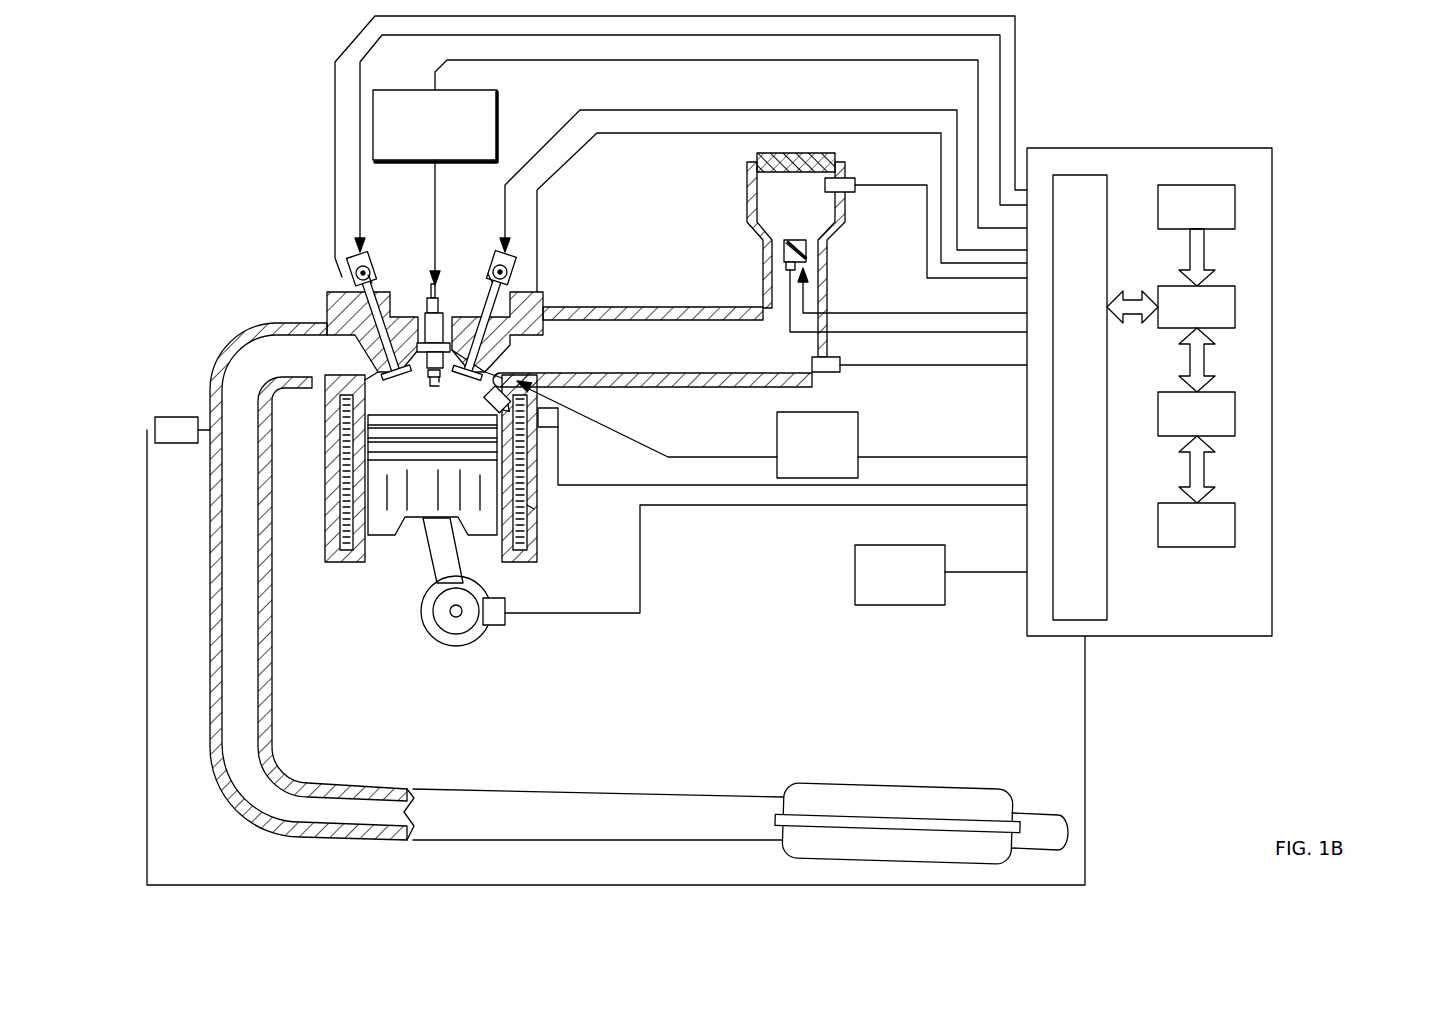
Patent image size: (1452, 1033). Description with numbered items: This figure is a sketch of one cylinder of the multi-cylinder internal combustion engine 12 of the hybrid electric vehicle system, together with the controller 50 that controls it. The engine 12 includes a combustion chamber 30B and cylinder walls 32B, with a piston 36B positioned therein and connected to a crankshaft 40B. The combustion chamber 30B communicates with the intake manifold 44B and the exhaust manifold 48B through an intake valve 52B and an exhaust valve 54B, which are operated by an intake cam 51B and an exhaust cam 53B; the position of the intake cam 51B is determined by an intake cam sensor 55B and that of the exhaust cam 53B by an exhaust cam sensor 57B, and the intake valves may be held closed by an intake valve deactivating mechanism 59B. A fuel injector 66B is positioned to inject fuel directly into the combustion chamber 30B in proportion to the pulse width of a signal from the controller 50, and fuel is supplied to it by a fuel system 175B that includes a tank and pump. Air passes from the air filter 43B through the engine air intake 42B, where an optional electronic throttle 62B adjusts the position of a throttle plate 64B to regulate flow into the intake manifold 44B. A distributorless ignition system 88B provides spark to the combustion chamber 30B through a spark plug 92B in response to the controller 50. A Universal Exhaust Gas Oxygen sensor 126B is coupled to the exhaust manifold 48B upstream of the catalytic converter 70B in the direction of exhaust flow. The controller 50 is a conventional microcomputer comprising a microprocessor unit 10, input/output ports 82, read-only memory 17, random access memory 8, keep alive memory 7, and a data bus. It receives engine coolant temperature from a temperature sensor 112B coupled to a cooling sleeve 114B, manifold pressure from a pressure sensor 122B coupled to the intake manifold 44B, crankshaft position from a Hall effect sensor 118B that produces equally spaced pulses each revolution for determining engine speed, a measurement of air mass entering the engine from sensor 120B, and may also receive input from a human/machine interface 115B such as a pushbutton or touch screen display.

The internal combustion engine 12 is at (252, 238).
The keep alive memory 7 is at (1236, 525).
The random access memory 8 is at (1236, 413).
The microprocessor unit 10 is at (1236, 306).
The read-only memory 17 is at (1236, 203).
The controller 50 is at (1258, 149).
The input/output ports 82 is at (1108, 183).
The combustion chamber 30B is at (432, 397).
The cylinder walls 32B is at (375, 553).
The piston 36B is at (415, 503).
The crankshaft 40B is at (443, 633).
The air intake 42B is at (818, 211).
The air filter 43B is at (750, 152).
The intake manifold 44B is at (653, 360).
The exhaust manifold 48B is at (319, 368).
The intake cam 51B is at (503, 210).
The intake valve 52B is at (480, 360).
The exhaust cam 53B is at (368, 250).
The exhaust valve 54B is at (377, 360).
The intake cam sensor 55B is at (512, 278).
The exhaust cam sensor 57B is at (342, 277).
The intake valve deactivating mechanism 59B is at (486, 278).
The electronic throttle 62B is at (810, 247).
The throttle plate 64B is at (772, 241).
The fuel injector 66B is at (548, 428).
The catalytic converter 70B is at (825, 787).
The distributorless ignition system 88B is at (388, 90).
The spark plug 92B is at (438, 300).
The temperature sensor 112B is at (795, 449).
The cooling sleeve 114B is at (533, 508).
The human/machine interface 115B is at (954, 575).
The Hall effect sensor 118B is at (505, 598).
The air mass sensor 120B is at (848, 178).
The pressure sensor 122B is at (830, 375).
The Universal Exhaust Gas Oxygen sensor 126B is at (153, 419).
The fuel system 175B is at (842, 456).